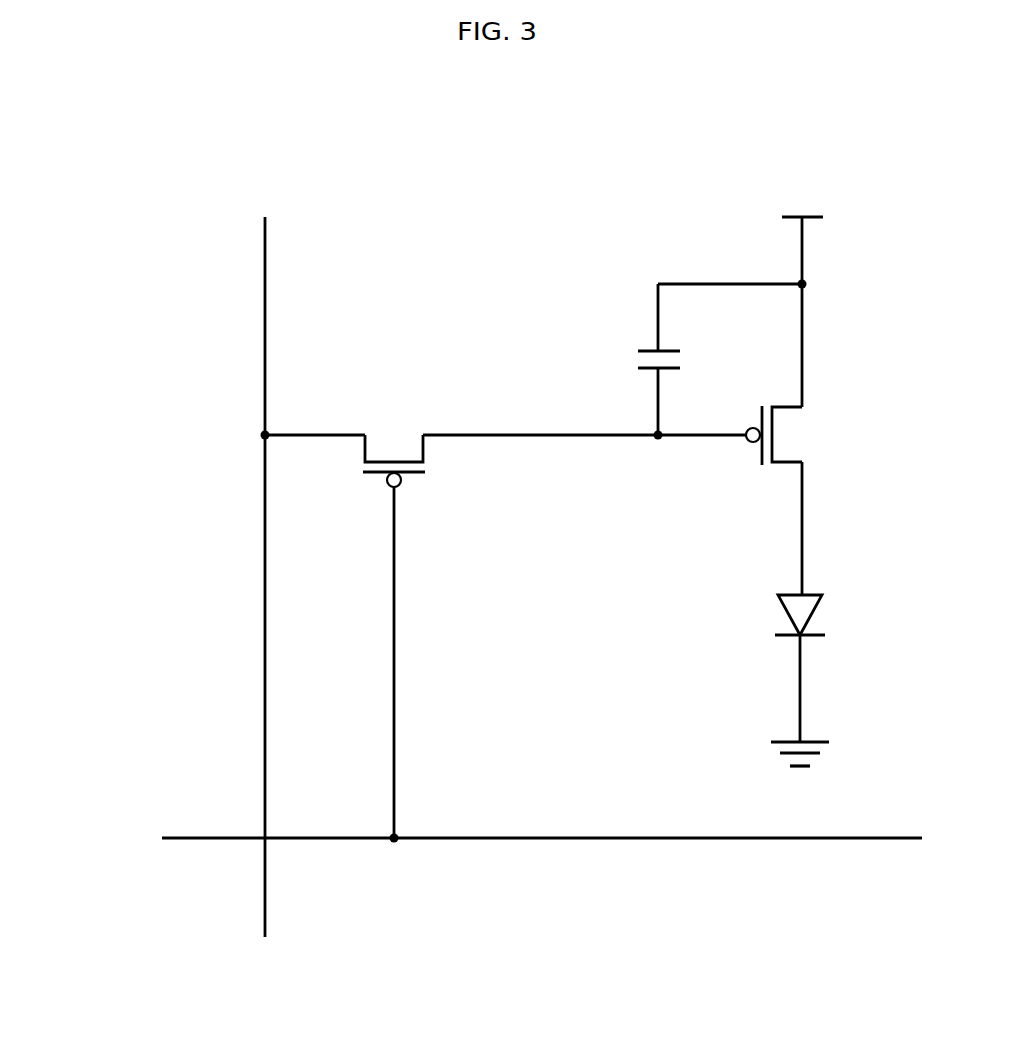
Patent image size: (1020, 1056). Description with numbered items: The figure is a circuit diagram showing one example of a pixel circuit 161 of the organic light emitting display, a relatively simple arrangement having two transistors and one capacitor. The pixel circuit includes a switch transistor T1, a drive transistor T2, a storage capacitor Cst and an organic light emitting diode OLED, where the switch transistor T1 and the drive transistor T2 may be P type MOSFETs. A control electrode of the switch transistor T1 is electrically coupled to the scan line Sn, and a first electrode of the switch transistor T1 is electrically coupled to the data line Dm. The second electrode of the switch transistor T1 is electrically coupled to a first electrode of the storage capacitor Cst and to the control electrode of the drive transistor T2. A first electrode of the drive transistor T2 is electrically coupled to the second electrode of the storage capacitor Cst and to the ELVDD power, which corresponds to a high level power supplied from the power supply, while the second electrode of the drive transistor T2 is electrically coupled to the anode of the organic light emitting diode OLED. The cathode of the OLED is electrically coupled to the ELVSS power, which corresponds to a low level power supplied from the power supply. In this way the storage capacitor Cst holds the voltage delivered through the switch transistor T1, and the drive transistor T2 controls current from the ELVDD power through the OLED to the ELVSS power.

The pixel circuit 161 is at (97, 168).
The data line Dm is at (263, 551).
The scan line Sn is at (514, 836).
The switch transistor T1 is at (394, 436).
The drive transistor T2 is at (799, 435).
The storage capacitor Cst is at (693, 358).
The ELVDD power ELVDD is at (802, 286).
The ELVSS power ELVSS is at (798, 728).
The organic light emitting diode OLED is at (849, 616).